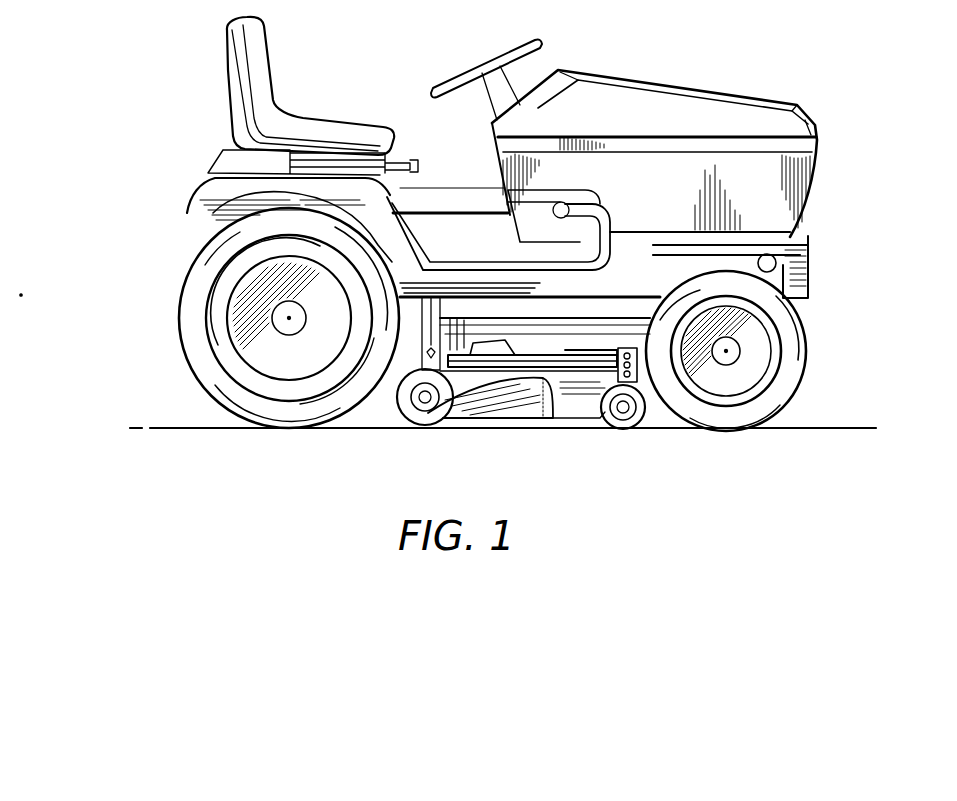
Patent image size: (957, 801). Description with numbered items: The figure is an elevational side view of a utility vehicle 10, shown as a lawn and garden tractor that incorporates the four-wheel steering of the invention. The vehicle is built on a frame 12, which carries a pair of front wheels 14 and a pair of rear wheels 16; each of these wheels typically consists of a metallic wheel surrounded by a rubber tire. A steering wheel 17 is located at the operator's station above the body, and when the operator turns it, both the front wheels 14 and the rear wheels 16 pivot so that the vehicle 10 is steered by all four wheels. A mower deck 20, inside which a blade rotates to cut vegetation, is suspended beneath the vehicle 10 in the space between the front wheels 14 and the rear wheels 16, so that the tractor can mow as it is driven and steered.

The utility vehicle 10 is at (717, 42).
The frame 12 is at (816, 279).
The front wheels 14 is at (808, 342).
The rear wheels 16 is at (177, 315).
The steering wheel 17 is at (528, 44).
The mower deck 20 is at (575, 417).